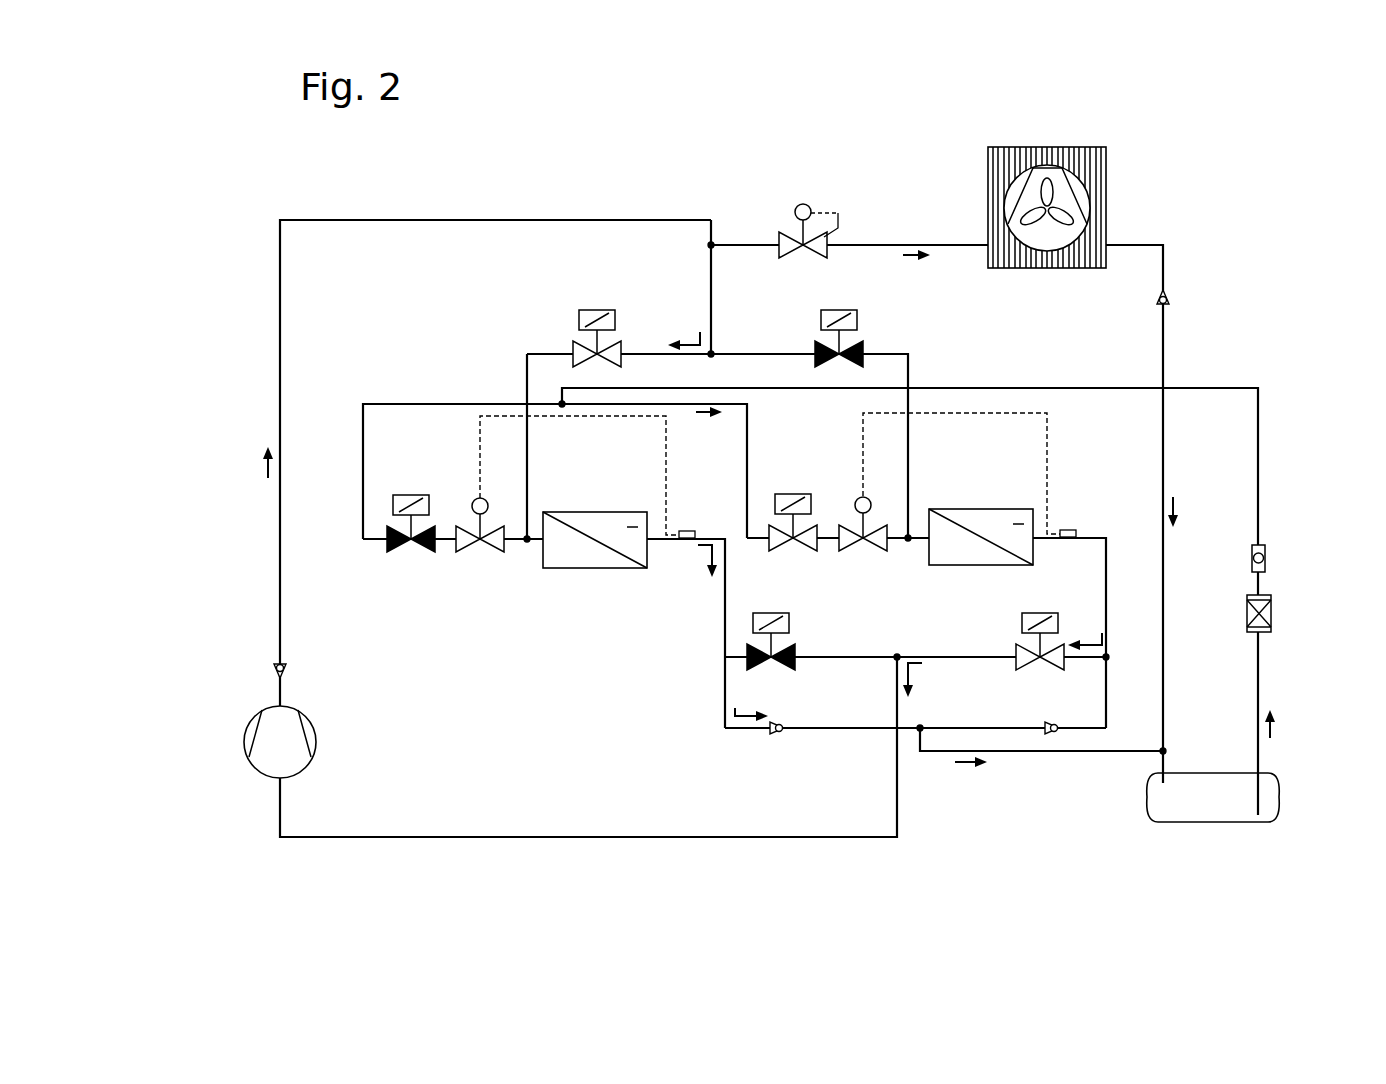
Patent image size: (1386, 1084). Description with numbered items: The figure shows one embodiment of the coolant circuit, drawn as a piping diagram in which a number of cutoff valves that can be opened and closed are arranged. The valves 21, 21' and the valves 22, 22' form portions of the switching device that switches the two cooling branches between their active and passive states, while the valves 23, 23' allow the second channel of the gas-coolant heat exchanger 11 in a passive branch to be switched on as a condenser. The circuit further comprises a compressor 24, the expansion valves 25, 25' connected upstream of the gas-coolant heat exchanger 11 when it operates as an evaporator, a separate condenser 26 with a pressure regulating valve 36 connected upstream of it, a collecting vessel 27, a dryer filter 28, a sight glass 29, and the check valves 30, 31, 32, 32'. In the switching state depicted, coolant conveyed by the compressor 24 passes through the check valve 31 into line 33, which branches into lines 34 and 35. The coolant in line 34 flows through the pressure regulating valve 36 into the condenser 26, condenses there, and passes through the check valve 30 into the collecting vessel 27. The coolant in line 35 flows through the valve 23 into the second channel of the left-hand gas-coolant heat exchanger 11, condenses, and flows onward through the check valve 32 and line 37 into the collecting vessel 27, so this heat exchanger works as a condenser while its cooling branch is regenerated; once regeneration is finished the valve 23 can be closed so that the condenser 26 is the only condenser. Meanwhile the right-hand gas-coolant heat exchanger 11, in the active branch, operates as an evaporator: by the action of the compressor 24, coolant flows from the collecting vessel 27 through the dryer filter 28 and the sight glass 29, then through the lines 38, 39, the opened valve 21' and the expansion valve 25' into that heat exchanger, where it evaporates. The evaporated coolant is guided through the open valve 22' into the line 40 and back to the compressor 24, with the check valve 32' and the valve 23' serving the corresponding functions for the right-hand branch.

The gas-coolant heat exchanger 11 is at (590, 555).
The valve 21 is at (411, 568).
The valve 21' is at (809, 558).
The valve 22 is at (780, 668).
The valve 22' is at (1040, 668).
The valve 23 is at (560, 321).
The valve 23' is at (885, 329).
The compressor 24 is at (272, 740).
The expansion valve 25 is at (575, 530).
The expansion valve 25' is at (957, 518).
The condenser 26 is at (1095, 172).
The collecting vessel 27 is at (1200, 808).
The dryer filter 28 is at (1272, 608).
The sight glass 29 is at (1265, 555).
The check valve 30 is at (1170, 297).
The check valve 31 is at (277, 670).
The check valve 32 is at (767, 770).
The check valve 32' is at (1063, 793).
The line 33 is at (280, 391).
The line 34 is at (733, 242).
The line 35 is at (711, 283).
The pressure regulating valve 36 is at (790, 238).
The line 37 is at (1012, 752).
The line 38 is at (1117, 388).
The line 39 is at (748, 465).
The line 40 is at (618, 838).